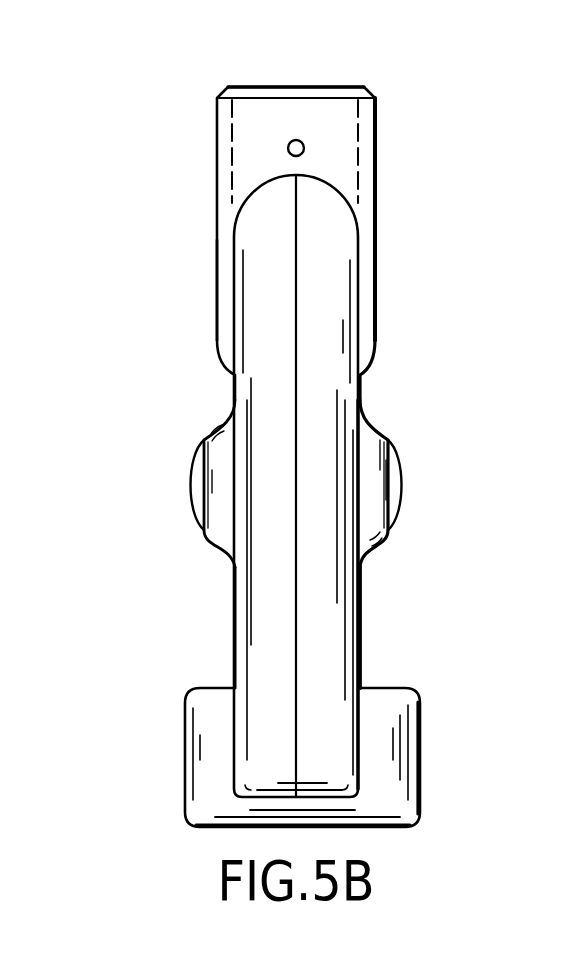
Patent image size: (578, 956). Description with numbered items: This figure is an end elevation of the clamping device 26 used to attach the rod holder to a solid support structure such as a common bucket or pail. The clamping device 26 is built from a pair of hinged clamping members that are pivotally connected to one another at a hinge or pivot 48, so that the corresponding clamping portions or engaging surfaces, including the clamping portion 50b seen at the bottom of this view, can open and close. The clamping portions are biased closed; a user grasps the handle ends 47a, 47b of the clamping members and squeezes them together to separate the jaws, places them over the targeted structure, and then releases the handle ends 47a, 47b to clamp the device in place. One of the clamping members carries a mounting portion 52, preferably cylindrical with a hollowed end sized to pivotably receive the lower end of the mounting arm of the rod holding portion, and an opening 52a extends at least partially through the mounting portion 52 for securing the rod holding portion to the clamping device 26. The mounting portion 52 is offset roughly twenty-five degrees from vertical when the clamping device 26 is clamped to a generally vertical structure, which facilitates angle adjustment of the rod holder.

The clamping device 26 is at (177, 50).
The mounting portion 52 is at (216, 181).
The opening 52a is at (306, 148).
The handle end 47a is at (217, 293).
The handle end 47b is at (337, 288).
The hinge or pivot 48 is at (192, 487).
The clamping portion 50b is at (403, 753).